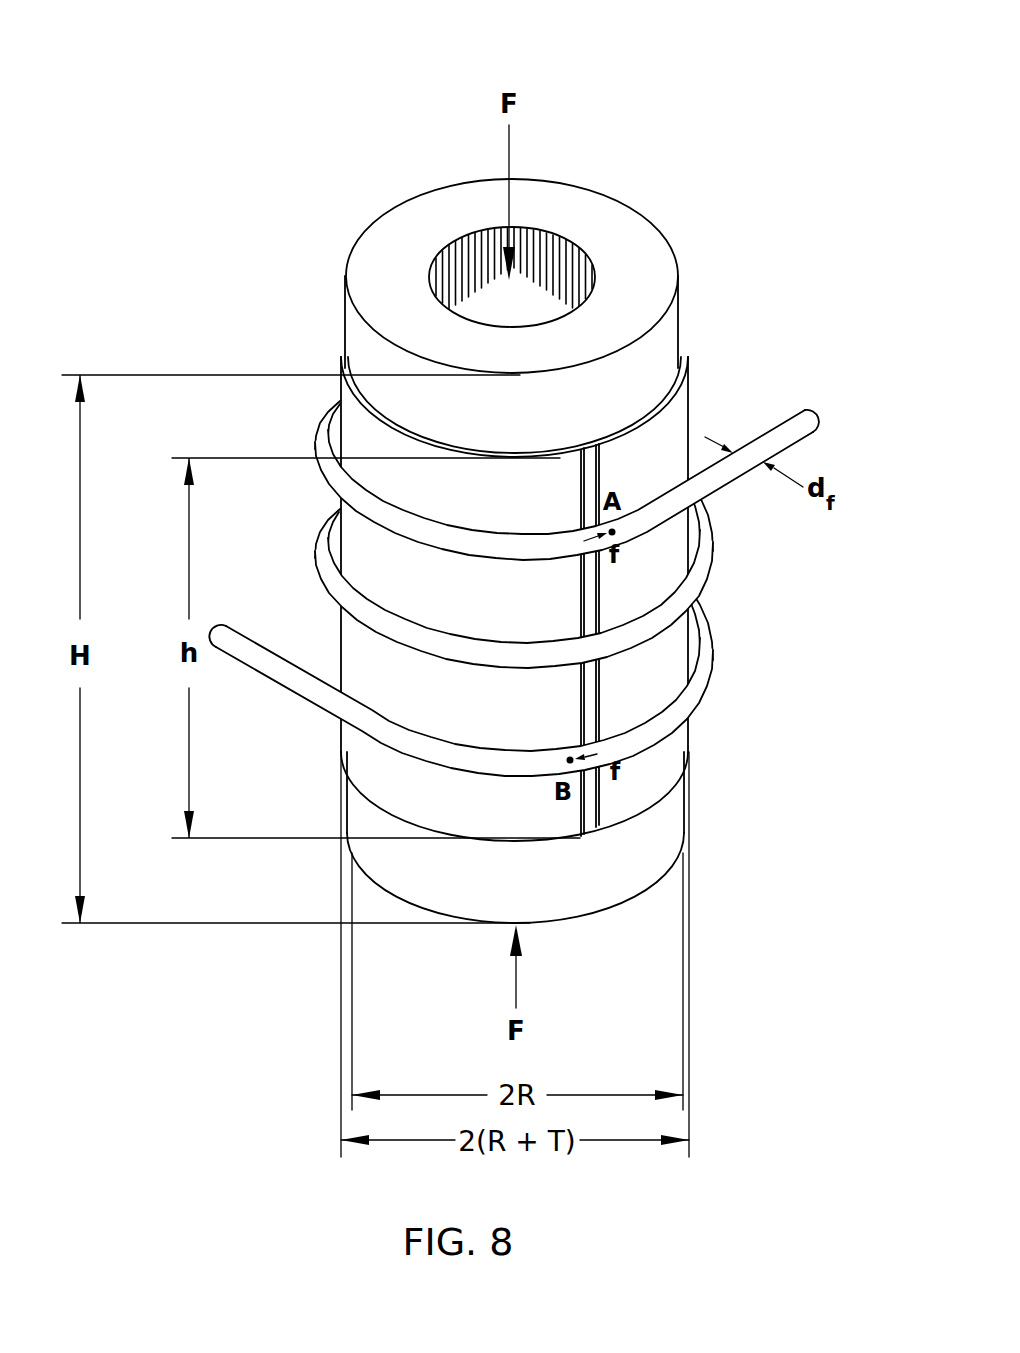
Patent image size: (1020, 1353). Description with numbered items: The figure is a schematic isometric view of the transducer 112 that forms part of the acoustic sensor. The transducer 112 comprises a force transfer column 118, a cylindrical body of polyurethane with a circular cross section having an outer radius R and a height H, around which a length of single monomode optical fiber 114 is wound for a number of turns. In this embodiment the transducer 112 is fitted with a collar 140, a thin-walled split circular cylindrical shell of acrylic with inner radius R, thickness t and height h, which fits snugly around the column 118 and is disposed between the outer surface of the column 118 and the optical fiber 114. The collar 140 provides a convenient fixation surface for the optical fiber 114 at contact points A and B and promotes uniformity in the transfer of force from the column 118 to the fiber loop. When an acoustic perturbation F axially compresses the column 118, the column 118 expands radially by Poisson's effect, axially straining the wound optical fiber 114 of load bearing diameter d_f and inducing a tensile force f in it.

The transducer 112 is at (534, 461).
The optical fiber 114 is at (720, 468).
The force transfer column 118 is at (643, 280).
The collar 140 is at (647, 690).